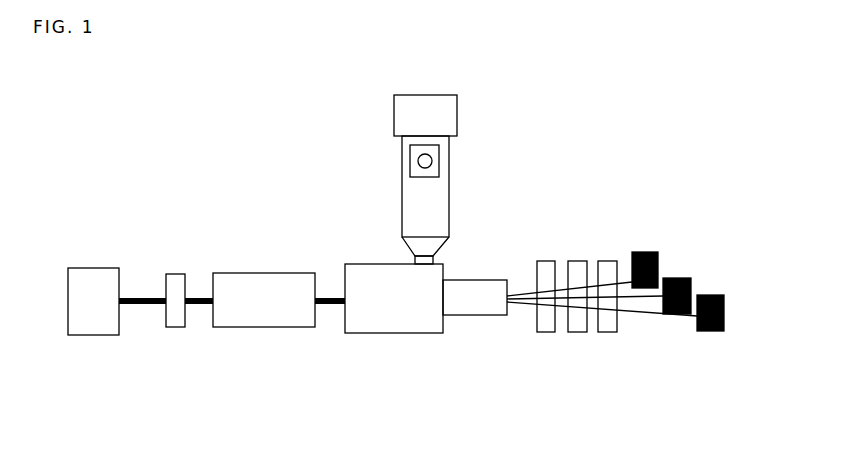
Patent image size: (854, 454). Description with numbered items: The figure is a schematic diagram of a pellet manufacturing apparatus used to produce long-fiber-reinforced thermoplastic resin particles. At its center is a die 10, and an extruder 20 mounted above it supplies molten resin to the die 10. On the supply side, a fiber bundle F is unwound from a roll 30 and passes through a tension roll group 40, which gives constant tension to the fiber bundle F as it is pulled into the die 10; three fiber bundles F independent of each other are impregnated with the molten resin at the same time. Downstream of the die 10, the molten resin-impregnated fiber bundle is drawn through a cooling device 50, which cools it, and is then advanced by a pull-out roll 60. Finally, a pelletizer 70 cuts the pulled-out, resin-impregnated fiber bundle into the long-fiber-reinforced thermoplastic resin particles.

The die 10 is at (392, 333).
The extruder 20 is at (449, 177).
The roll of a fiber bundle 30 is at (658, 260).
The tension roll group 40 is at (621, 336).
The cooling device 50 is at (258, 327).
The pull-out roll 60 is at (175, 327).
The pelletizer 70 is at (93, 335).
The fiber bundle F is at (528, 305).